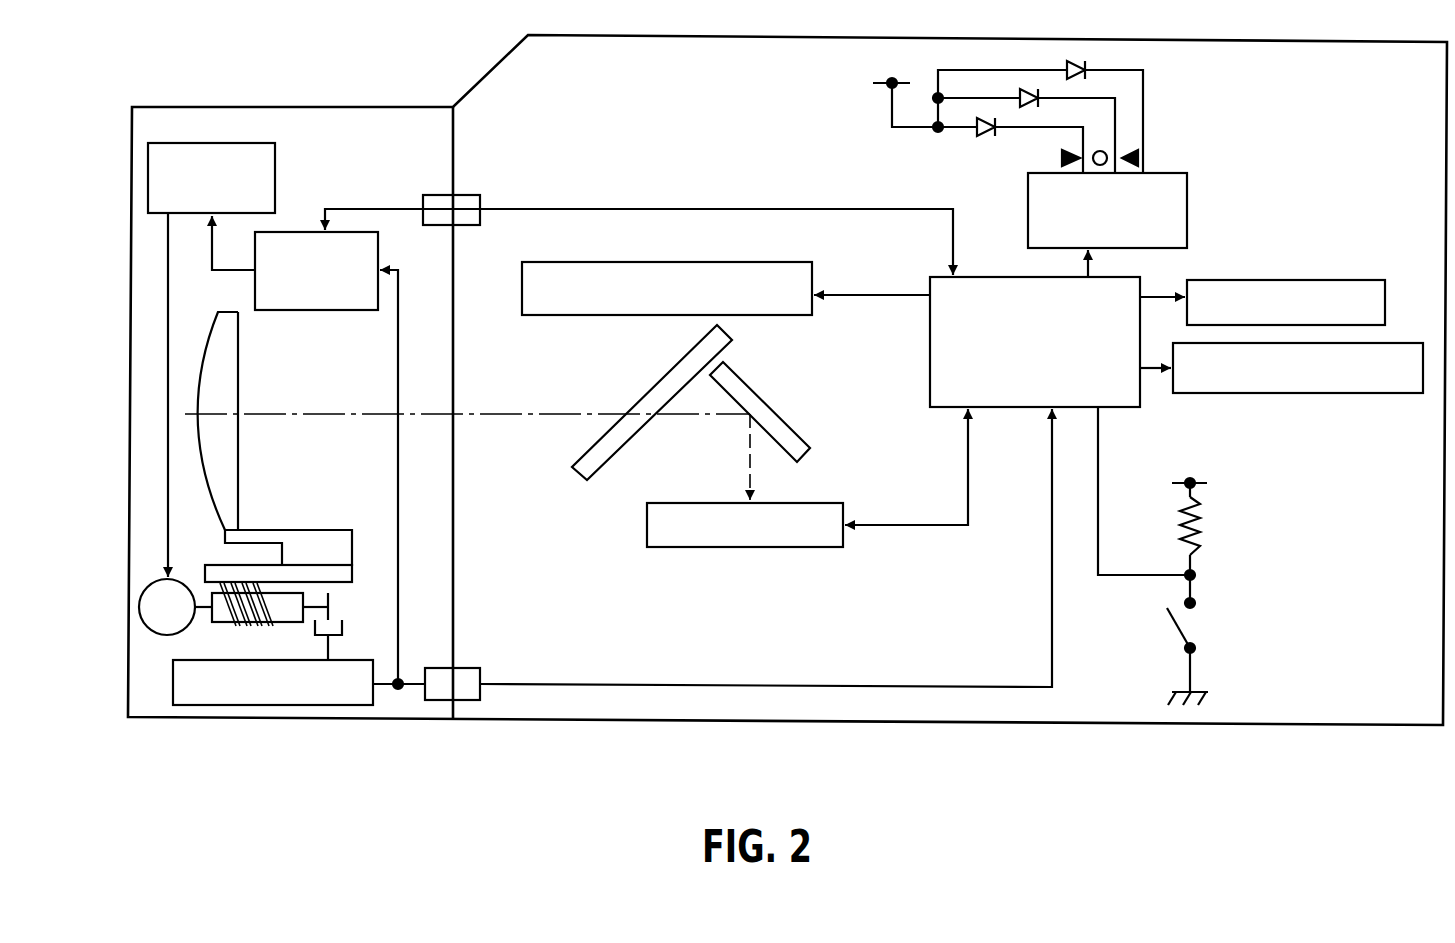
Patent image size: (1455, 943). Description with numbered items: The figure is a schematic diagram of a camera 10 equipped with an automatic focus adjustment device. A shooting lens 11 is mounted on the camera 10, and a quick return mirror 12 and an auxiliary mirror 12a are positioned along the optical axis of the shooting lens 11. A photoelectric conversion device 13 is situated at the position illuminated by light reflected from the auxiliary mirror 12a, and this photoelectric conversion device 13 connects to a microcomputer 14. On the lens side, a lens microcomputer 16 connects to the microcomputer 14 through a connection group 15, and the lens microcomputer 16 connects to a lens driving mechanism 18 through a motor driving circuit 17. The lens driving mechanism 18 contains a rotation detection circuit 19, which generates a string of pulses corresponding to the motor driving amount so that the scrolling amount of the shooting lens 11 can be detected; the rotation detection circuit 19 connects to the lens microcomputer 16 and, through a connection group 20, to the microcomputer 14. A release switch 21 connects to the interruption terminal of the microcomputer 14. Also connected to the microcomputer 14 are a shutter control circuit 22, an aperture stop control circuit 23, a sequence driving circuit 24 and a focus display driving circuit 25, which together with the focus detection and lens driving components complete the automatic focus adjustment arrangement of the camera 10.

The camera 10 is at (653, 128).
The shooting lens 11 is at (240, 462).
The quick return mirror 12 is at (572, 466).
The auxiliary mirror 12a is at (790, 425).
The photoelectric conversion device 13 is at (790, 547).
The microcomputer 14 is at (940, 407).
The connection group 15 is at (467, 193).
The lens microcomputer 16 is at (328, 310).
The motor driving circuit 17 is at (233, 143).
The lens driving mechanism 18 is at (325, 530).
The rotation detection circuit 19 is at (297, 705).
The connection group 20 is at (480, 668).
The release switch 21 is at (1197, 602).
The shutter control circuit 22 is at (1345, 393).
The aperture stop control circuit 23 is at (1340, 280).
The sequence driving circuit 24 is at (550, 315).
The focus display driving circuit 25 is at (1185, 173).